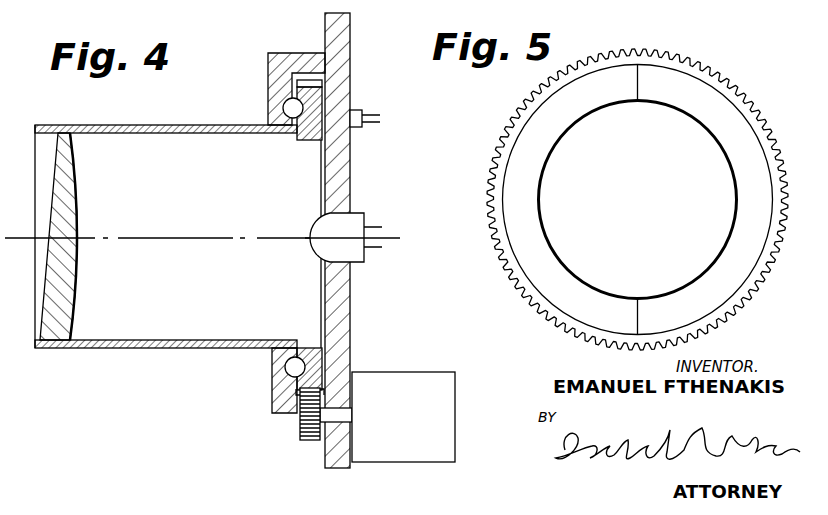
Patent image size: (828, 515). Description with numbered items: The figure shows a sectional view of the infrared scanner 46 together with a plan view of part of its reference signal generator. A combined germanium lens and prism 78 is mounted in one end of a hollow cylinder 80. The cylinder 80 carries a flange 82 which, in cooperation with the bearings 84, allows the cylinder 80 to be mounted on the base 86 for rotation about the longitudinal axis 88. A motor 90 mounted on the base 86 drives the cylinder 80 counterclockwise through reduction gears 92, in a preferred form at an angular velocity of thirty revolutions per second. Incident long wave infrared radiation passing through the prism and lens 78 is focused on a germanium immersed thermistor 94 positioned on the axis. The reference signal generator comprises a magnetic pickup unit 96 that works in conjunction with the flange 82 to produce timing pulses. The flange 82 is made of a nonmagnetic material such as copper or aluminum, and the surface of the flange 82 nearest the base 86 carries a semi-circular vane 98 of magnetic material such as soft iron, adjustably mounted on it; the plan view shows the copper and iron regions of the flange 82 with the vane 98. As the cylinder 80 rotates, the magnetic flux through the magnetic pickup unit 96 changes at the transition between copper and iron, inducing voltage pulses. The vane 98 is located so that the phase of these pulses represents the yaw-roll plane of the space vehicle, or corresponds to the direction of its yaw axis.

In FIG. 4, the scanner 46 is at (171, 350).
In FIG. 4, the combined germanium lens and prism 78 is at (67, 265).
In FIG. 4, the hollow cylinder 80 is at (152, 128).
In FIG. 4, the flange 82 is at (312, 117).
In FIG. 5, the flange 82 is at (520, 291).
In FIG. 4, the bearings 84 is at (270, 108).
In FIG. 4, the base 86 is at (341, 38).
In FIG. 4, the longitudinal axis 88 is at (197, 237).
In FIG. 4, the motor 90 is at (410, 425).
In FIG. 4, the reduction gears 92 is at (298, 435).
In FIG. 4, the germanium immersed thermistor 94 is at (354, 216).
In FIG. 4, the magnetic pickup unit 96 is at (352, 114).
In FIG. 5, the semi-circular vane 98 is at (713, 165).